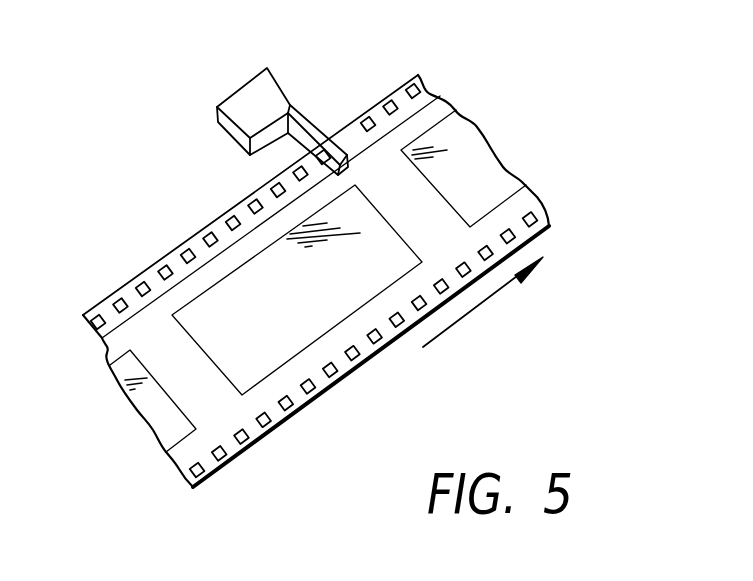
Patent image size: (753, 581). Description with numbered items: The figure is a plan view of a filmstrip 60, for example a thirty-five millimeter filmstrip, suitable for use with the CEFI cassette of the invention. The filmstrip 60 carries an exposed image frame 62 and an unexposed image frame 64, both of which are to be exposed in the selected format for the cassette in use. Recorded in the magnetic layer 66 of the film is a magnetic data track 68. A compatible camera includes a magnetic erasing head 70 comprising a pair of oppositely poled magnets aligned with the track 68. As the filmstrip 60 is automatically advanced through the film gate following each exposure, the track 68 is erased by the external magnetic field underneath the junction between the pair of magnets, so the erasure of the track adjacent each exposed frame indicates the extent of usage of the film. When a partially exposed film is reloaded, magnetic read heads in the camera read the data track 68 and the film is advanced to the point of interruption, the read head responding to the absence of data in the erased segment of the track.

The filmstrip 60 is at (316, 278).
The exposed image frame 62 is at (488, 187).
The unexposed image frame 64 is at (333, 312).
The magnetic layer 66 is at (105, 352).
The magnetic data track 68 is at (138, 311).
The magnetic erasing head 70 is at (247, 95).